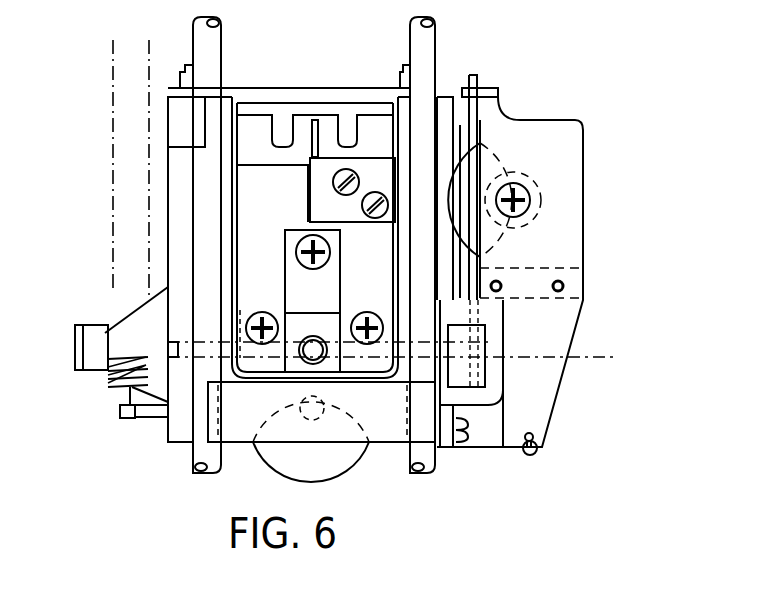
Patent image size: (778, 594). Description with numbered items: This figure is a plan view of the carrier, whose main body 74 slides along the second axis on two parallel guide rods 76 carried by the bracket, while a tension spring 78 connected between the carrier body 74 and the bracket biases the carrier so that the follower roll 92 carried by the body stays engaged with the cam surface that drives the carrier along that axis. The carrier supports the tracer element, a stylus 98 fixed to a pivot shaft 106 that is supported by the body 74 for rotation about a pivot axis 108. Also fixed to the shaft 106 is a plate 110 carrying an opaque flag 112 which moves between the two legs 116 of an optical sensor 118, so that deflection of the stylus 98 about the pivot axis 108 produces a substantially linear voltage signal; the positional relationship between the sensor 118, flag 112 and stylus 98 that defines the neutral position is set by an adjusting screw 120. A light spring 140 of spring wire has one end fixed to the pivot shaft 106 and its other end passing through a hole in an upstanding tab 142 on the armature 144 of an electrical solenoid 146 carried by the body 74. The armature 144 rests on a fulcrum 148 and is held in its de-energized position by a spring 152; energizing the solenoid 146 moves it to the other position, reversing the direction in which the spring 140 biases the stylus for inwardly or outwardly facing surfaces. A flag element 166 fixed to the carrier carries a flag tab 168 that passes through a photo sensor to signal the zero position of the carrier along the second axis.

The main body 74 is at (168, 180).
The guide rods 76 is at (214, 40).
The tension spring 78 is at (115, 386).
The follower roll 92 is at (349, 460).
The stylus 98 is at (318, 337).
The pivot shaft 106 is at (310, 312).
The pivot axis 108 is at (592, 356).
The plate 110 is at (280, 226).
The opaque flag 112 is at (311, 140).
The legs 116 is at (262, 128).
The optical sensor 118 is at (310, 105).
The adjusting screw 120 is at (296, 266).
The light spring 140 is at (482, 118).
The upstanding tab 142 is at (488, 90).
The armature 144 is at (580, 148).
The electrical solenoid 146 is at (582, 208).
The fulcrum 148 is at (560, 298).
The spring 152 is at (538, 455).
The flag element 166 is at (100, 330).
The flag tab 168 is at (73, 338).